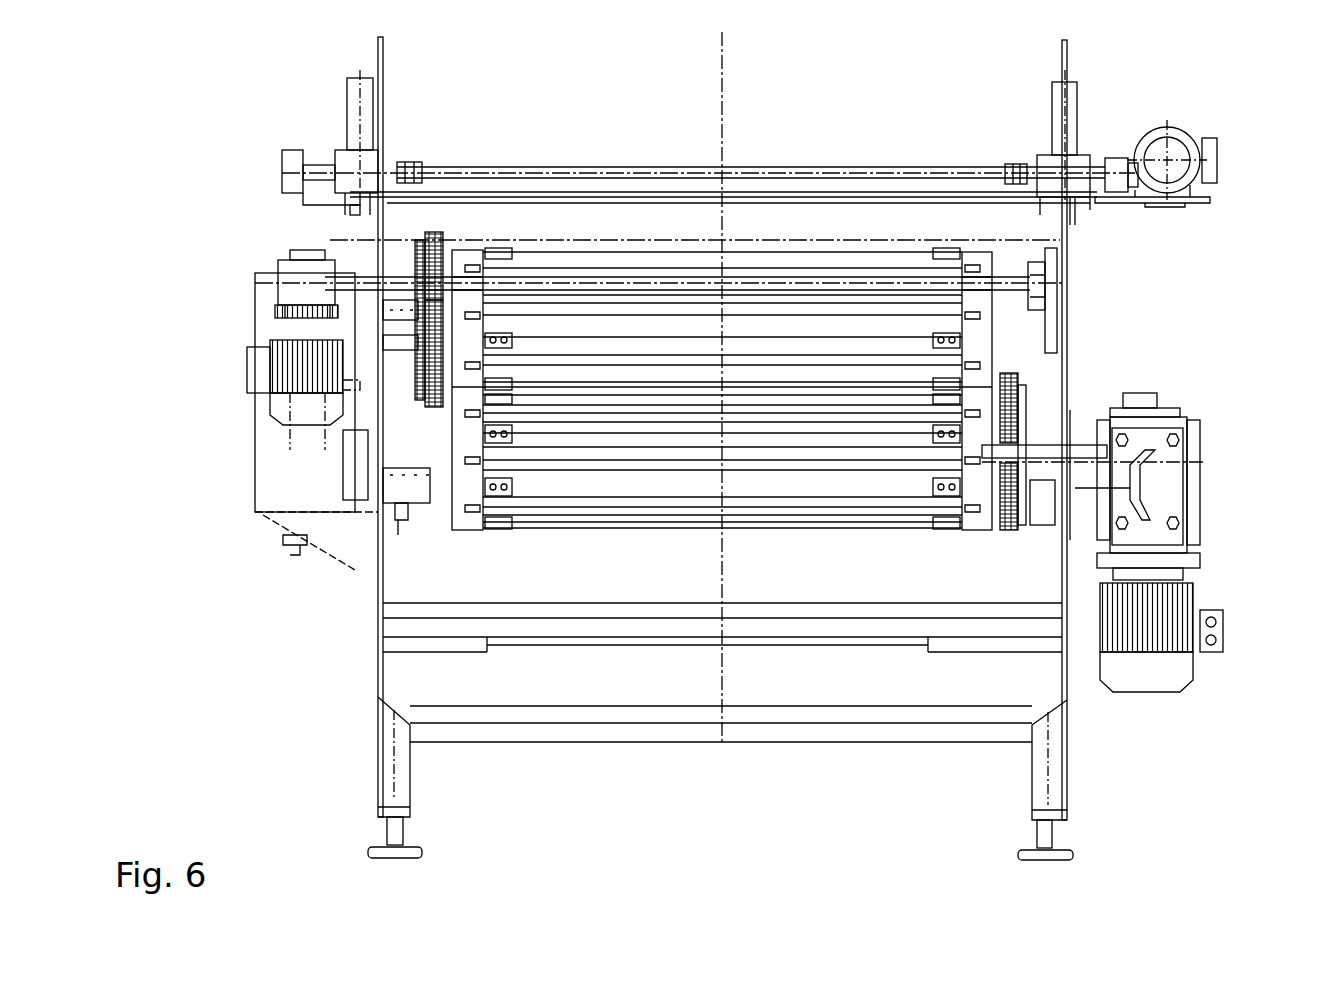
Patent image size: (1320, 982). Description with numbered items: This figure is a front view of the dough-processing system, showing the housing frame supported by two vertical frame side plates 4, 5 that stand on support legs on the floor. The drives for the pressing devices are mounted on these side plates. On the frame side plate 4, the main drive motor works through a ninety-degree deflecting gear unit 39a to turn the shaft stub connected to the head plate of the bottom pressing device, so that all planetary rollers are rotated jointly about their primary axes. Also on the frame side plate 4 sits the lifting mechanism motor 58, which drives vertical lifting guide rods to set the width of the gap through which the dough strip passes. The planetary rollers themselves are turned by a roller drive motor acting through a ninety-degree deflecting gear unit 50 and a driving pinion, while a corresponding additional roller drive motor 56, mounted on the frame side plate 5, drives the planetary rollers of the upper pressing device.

The frame side plate 4 is at (1065, 108).
The frame side plate 5 is at (378, 134).
The 90° deflecting gear unit 50 is at (295, 280).
The roller drive motor 56 is at (295, 370).
The lifting mechanism motor 58 is at (1178, 170).
The 90° deflecting gear unit 39a is at (1178, 476).